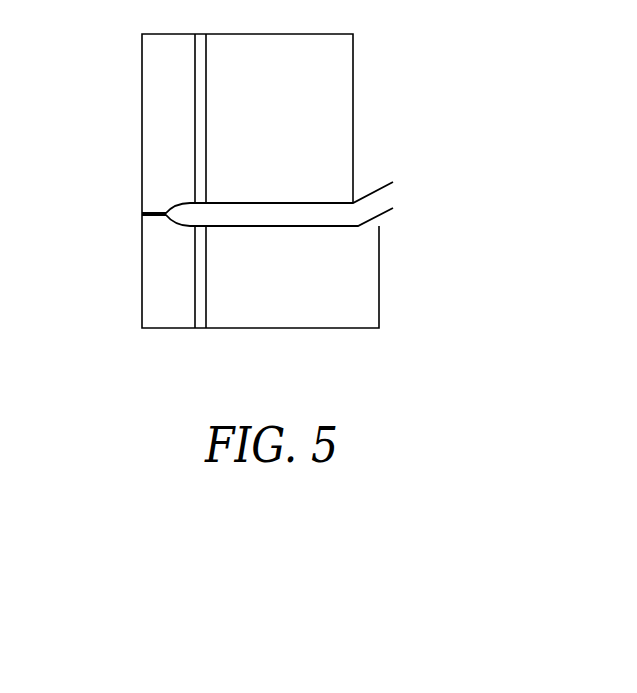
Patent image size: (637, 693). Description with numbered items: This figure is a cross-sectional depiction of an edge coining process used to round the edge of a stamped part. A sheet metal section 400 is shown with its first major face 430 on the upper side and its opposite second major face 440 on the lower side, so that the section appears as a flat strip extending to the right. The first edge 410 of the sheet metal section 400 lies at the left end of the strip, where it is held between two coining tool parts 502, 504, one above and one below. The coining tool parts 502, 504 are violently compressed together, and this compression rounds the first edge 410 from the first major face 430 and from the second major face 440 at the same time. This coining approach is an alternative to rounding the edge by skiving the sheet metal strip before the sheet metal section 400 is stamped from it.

The sheet metal section 400 is at (382, 198).
The first edge 410 is at (166, 212).
The first major face 430 is at (252, 203).
The second major face 440 is at (253, 227).
The coining tool part 502 is at (155, 93).
The coining tool part 504 is at (155, 286).